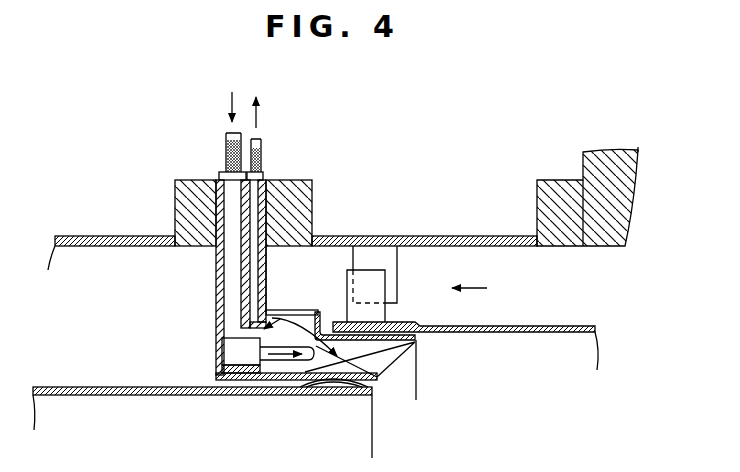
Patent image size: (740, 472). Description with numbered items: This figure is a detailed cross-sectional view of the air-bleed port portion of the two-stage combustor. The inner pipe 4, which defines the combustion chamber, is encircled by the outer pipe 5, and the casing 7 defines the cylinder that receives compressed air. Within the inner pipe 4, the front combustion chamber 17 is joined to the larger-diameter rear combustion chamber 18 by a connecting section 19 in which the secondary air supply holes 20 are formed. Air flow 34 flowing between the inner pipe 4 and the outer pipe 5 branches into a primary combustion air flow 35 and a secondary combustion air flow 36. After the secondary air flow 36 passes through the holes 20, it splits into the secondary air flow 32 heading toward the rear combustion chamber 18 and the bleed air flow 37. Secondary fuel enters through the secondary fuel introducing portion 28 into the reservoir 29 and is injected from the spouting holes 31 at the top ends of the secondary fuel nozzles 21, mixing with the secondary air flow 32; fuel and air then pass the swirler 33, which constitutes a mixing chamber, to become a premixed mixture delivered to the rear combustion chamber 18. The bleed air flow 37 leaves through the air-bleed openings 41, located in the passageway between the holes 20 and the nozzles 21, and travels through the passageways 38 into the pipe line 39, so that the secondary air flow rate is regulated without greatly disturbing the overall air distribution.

The inner pipe 4 is at (557, 326).
The outer pipe 5 is at (478, 236).
The casing 7 is at (606, 151).
The front combustion chamber 17 is at (162, 442).
The rear combustion chamber 18 is at (512, 377).
The connecting section 19 is at (410, 425).
The secondary air supply holes 20 is at (297, 315).
The secondary fuel nozzles 21 is at (282, 360).
The secondary fuel introducing portion 28 is at (228, 142).
The reservoir 29 is at (227, 350).
The spouting holes 31 is at (304, 380).
The secondary air flow 32 is at (316, 321).
The swirler 33 is at (350, 388).
The air flow 34 is at (491, 288).
The primary combustion air flow 35 is at (212, 273).
The secondary combustion air flow 36 is at (290, 316).
The bleed air flow 37 is at (299, 311).
The passageways 38 is at (263, 197).
The pipe line 39 is at (256, 143).
The air-bleed openings 41 is at (255, 328).